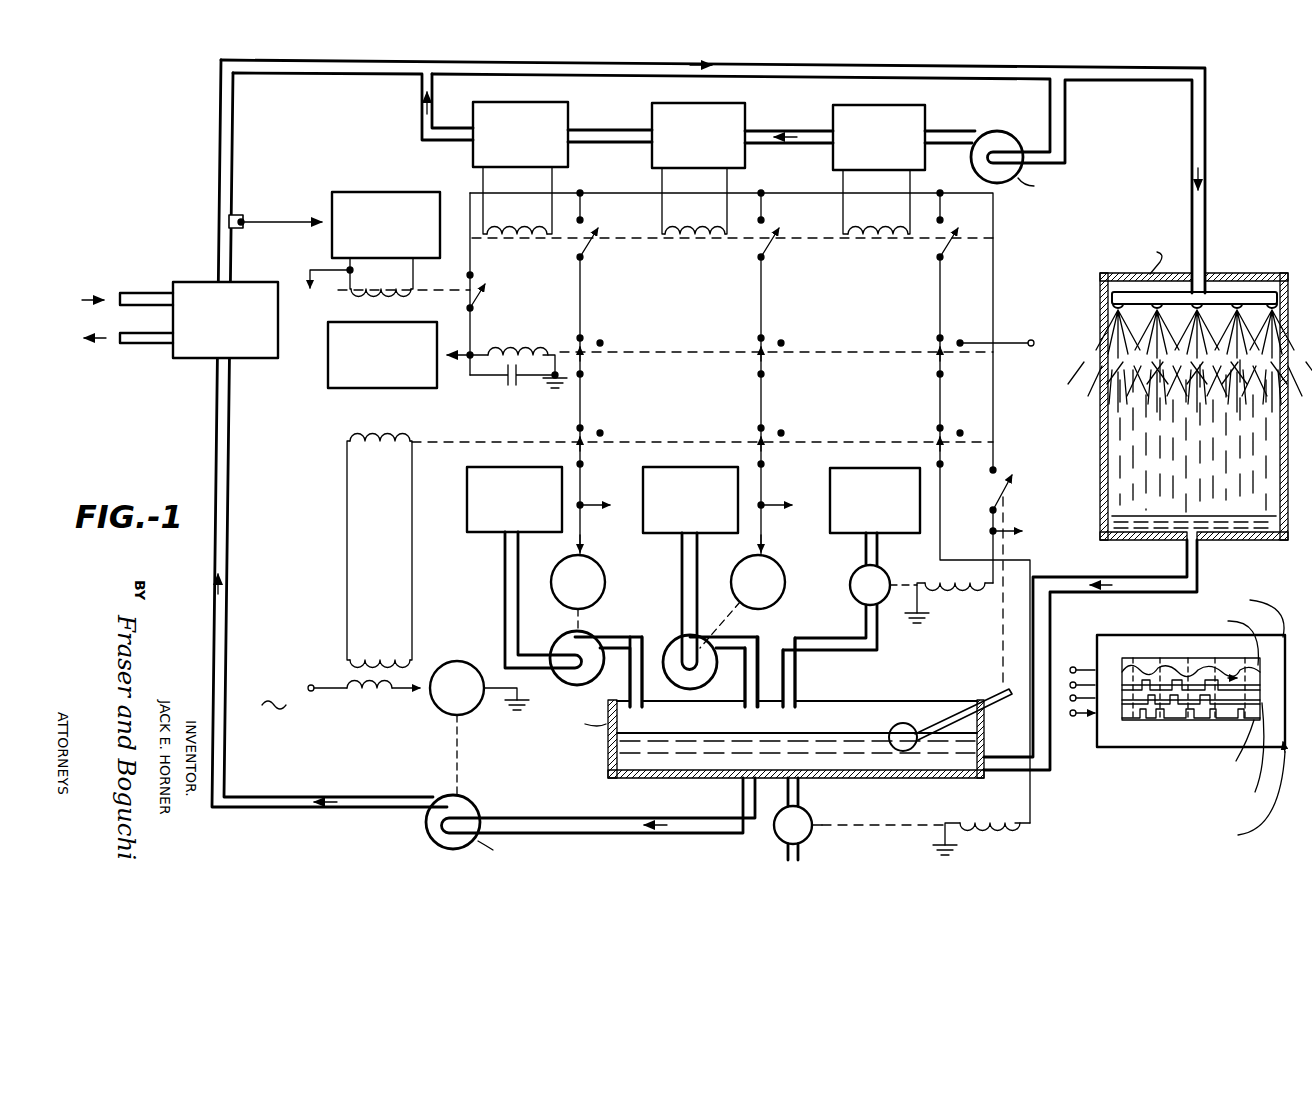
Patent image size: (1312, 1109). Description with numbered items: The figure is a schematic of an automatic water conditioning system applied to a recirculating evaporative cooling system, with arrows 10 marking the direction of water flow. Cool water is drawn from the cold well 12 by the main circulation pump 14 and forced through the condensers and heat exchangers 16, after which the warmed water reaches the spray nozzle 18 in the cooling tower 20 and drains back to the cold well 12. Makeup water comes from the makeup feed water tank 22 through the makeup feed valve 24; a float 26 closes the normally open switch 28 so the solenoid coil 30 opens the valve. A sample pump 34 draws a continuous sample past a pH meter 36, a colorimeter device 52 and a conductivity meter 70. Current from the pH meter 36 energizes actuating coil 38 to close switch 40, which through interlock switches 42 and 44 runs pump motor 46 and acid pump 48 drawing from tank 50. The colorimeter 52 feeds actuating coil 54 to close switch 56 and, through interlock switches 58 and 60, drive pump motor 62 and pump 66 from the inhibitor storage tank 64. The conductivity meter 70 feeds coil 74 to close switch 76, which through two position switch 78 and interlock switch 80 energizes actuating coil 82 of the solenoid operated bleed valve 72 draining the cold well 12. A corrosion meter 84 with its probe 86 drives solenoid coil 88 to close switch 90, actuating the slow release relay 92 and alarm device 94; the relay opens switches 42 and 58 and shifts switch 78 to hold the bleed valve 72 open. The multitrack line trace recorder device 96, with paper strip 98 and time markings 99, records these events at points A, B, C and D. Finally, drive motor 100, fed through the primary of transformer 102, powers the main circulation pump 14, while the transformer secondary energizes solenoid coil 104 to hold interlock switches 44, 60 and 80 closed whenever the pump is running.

The arrows 10 is at (232, 64).
The cold well 12 is at (985, 730).
The main circulation pump 14 is at (474, 801).
The condensers and heat exchangers 16 is at (192, 280).
The spray nozzle 18 is at (1222, 275).
The cooling tower 20 is at (1100, 318).
The makeup feed water tank 22 is at (840, 468).
The makeup feed valve 24 is at (884, 572).
The float 26 is at (901, 722).
The normally open switch 28 is at (1008, 493).
The solenoid coil 30 is at (950, 594).
The sample pump 34 is at (984, 133).
The pH meter 36 is at (484, 112).
The actuating coil 38 is at (510, 250).
The normally open switch 40 is at (596, 252).
The normally closed interlock switch 42 is at (592, 370).
The normally closed interlock switch 44 is at (586, 449).
The pump motor 46 is at (597, 572).
The acid pump 48 is at (566, 634).
The tank 50 is at (478, 470).
The colorimeter device 52 is at (664, 112).
The actuating coil 54 is at (568, 252).
The normally open switch 56 is at (777, 252).
The normally closed interlock switch 58 is at (773, 370).
The normally closed interlock switch 60 is at (769, 449).
The pump motor 62 is at (778, 572).
The storage tank 64 is at (652, 470).
The pump 66 is at (676, 636).
The conductivity meter 70 is at (843, 112).
The solenoid operated bleed valve 72 is at (814, 818).
The solenoid actuating coil 74 is at (868, 252).
The normally open solenoid switch 76 is at (955, 252).
The two position switch 78 is at (950, 366).
The normally closed interlock switch 80 is at (947, 453).
The actuating coil 82 is at (976, 838).
The corrosion meter 84 is at (340, 196).
The probe 86 is at (246, 216).
The solenoid coil 88 is at (406, 296).
The normally open switch 90 is at (486, 305).
The slow release relay 92 is at (490, 366).
The alarm device 94 is at (338, 322).
The multitrack line trace recorder device 96 is at (1128, 634).
The elongated paper strip 98 is at (1150, 722).
The transverse visual time markings 99 is at (1158, 660).
The electric drive motor 100 is at (432, 704).
The transformer 102 is at (420, 670).
The solenoid coil 104 is at (382, 437).